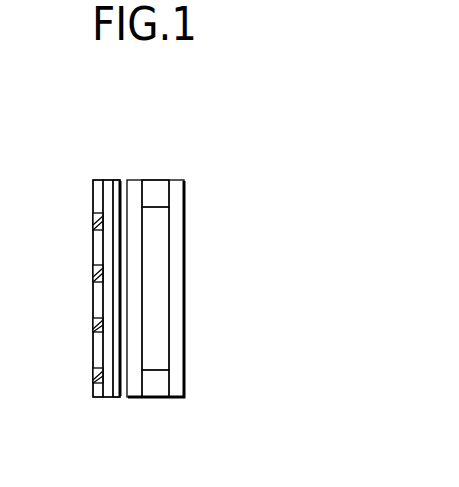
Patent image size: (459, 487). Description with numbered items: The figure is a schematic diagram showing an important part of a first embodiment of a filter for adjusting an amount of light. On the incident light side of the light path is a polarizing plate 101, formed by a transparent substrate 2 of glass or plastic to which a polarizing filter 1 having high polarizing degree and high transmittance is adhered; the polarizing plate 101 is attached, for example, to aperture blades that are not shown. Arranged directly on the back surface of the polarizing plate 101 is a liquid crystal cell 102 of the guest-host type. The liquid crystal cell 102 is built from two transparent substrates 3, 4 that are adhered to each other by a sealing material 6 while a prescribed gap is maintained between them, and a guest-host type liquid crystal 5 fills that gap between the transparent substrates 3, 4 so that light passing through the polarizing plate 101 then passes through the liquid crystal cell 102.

The polarizing plate 101 is at (125, 127).
The polarizing filter 1 is at (93, 178).
The transparent substrate 2 is at (108, 178).
The transparent substrate 3 is at (134, 178).
The liquid crystal cell 102 is at (192, 408).
The transparent substrate 4 is at (176, 200).
The guest-host type liquid crystal 5 is at (158, 263).
The sealing material 6 is at (162, 385).